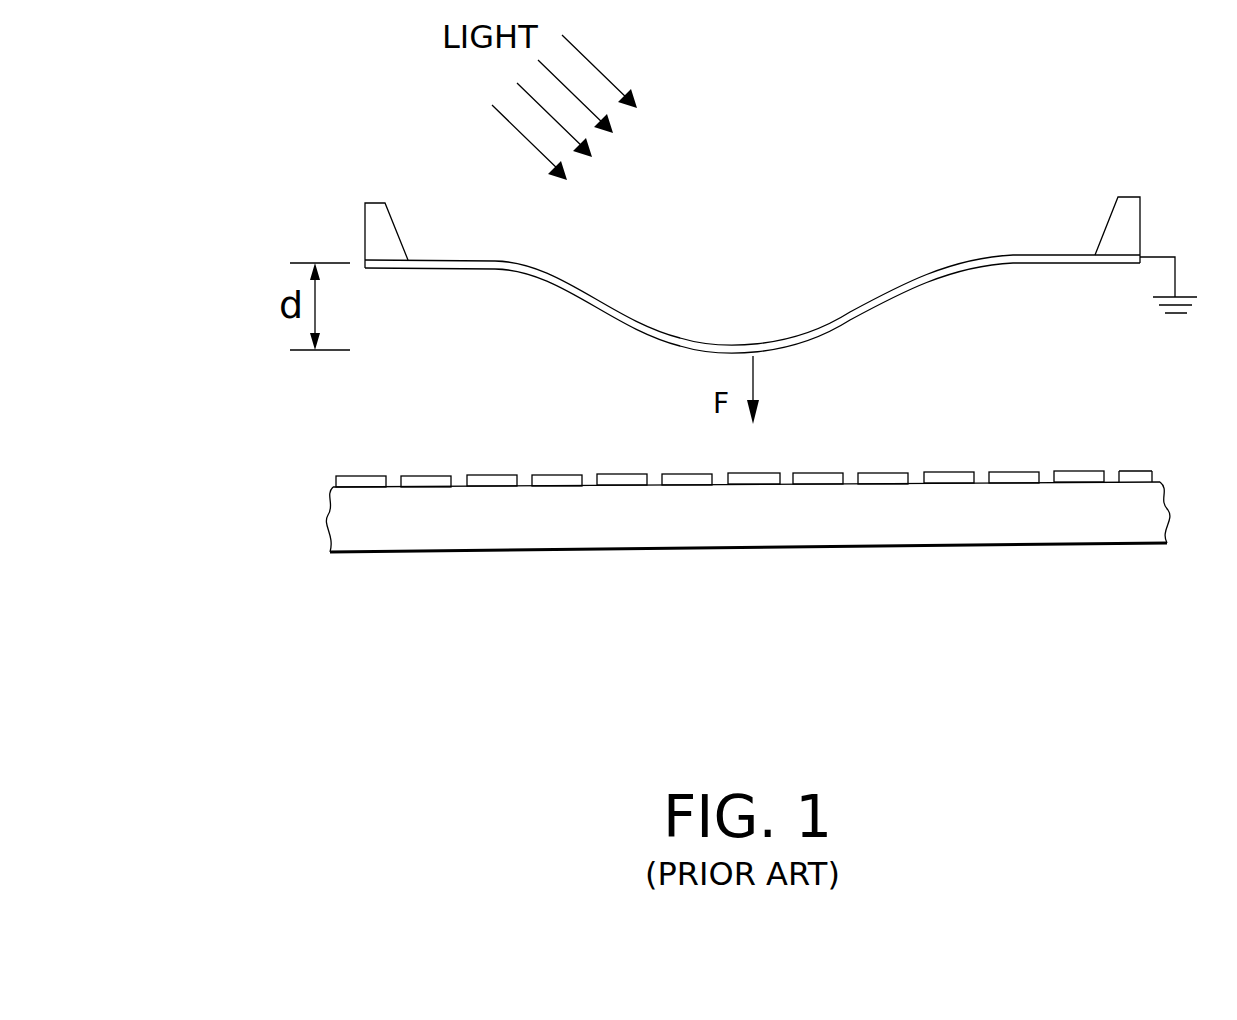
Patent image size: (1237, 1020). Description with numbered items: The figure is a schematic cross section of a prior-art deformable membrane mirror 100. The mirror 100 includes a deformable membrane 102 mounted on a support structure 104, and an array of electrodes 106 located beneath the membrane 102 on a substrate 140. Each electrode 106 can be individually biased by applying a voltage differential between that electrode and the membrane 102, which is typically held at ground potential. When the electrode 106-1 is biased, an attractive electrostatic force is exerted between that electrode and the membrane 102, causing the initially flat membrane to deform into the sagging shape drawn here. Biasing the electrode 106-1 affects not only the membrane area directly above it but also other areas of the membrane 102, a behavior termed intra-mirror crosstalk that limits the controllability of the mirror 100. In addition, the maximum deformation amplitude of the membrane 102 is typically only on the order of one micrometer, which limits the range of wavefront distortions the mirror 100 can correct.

The deformable membrane mirror 100 is at (275, 648).
The deformable membrane 102 is at (918, 276).
The support structure 104 is at (383, 202).
The electrodes 106 is at (958, 471).
The electrode 106-1 is at (758, 473).
The substrate 140 is at (973, 547).